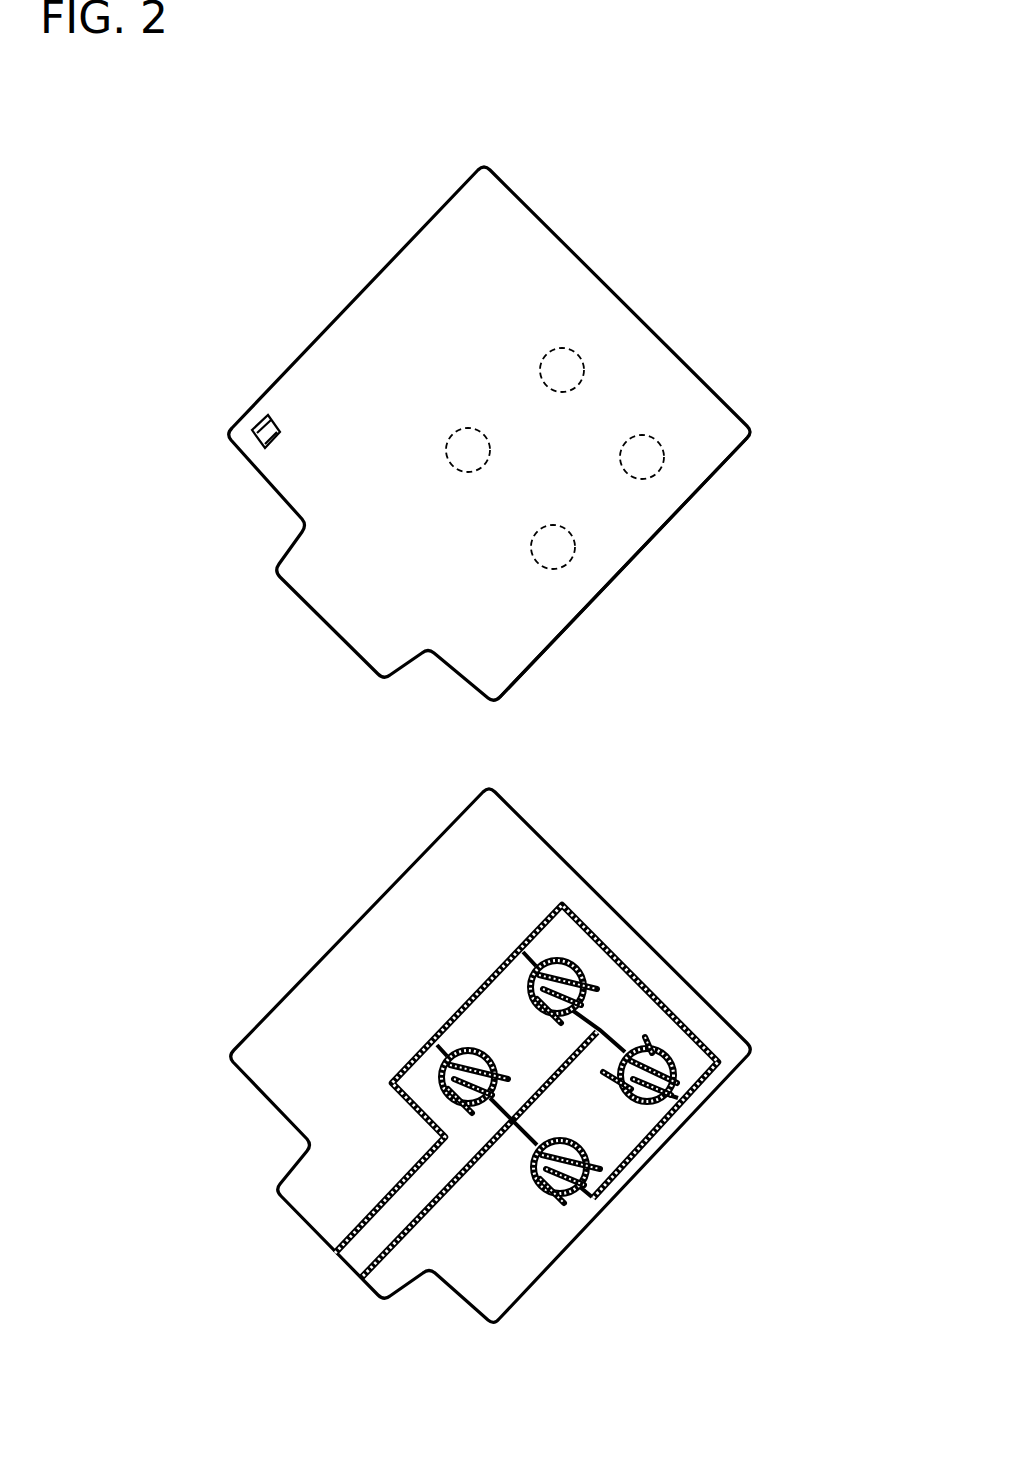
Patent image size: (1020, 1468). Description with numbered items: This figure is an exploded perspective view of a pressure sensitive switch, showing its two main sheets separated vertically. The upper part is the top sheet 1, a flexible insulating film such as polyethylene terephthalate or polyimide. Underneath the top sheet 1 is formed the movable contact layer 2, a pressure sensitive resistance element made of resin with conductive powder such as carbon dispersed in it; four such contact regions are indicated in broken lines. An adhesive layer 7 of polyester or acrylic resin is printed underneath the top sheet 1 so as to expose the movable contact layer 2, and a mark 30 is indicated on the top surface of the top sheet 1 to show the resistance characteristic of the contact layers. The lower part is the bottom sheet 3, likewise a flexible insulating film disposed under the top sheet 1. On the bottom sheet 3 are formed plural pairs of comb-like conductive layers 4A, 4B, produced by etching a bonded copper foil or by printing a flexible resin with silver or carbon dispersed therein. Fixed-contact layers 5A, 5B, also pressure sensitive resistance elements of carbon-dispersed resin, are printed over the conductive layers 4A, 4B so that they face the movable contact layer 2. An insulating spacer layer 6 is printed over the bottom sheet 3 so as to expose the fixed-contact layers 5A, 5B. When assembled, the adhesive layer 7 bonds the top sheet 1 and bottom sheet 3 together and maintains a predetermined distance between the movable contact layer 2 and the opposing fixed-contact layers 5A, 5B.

The top sheet 1 is at (678, 377).
The movable contact layer 2 is at (645, 447).
The adhesive layer 7 is at (630, 590).
The mark 30 is at (258, 425).
The insulating spacer layer 6 is at (333, 922).
The bottom sheet 3 is at (603, 1039).
The comb-like conductive layer 4A is at (737, 1043).
The fixed-contact layer 5A is at (737, 1043).
The comb-like conductive layer 4B is at (737, 1043).
The fixed-contact layer 5B is at (653, 1045).